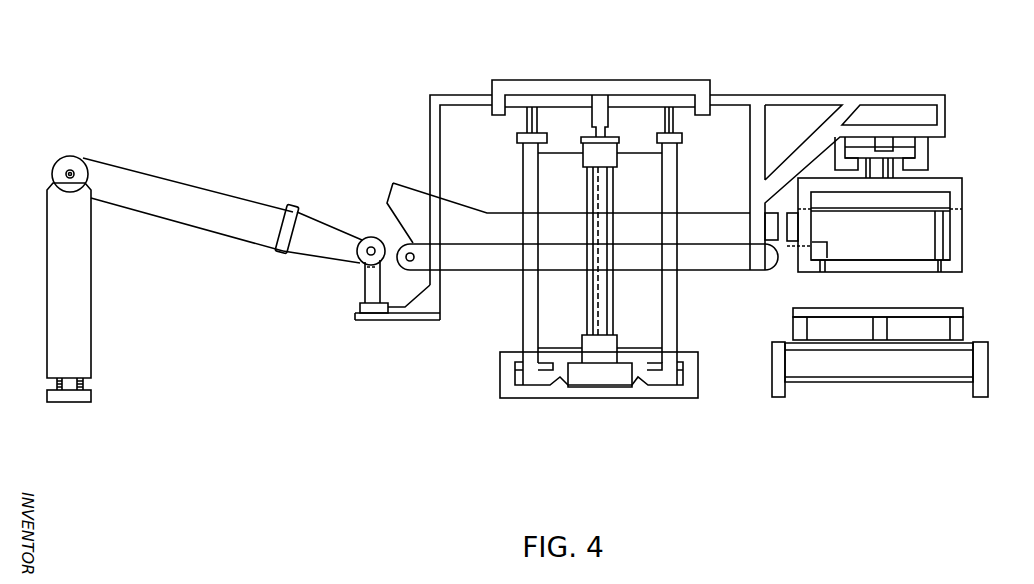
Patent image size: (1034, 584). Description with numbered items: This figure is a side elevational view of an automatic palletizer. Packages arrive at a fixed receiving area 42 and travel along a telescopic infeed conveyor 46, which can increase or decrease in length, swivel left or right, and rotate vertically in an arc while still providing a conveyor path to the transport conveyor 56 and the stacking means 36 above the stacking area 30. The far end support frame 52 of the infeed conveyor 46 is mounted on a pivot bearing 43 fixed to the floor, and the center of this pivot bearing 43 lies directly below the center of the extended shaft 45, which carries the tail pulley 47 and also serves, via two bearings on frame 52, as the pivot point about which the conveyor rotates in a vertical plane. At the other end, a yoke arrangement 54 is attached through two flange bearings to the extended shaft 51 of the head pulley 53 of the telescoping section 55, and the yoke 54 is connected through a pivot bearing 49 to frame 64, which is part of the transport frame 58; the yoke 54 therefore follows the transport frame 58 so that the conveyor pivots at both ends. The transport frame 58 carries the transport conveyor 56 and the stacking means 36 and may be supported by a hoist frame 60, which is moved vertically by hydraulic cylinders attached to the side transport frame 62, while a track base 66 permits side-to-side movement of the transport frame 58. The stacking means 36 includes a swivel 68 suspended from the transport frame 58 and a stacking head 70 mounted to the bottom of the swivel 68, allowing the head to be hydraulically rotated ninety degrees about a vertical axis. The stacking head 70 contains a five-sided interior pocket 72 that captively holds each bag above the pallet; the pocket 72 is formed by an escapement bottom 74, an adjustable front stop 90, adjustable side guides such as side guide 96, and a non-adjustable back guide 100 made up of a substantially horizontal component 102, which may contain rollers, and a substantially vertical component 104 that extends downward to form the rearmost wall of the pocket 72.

The stacking area 30 is at (864, 297).
The stacking means 36 is at (995, 248).
The receiving area 42 is at (82, 147).
The pivot bearing 43 is at (82, 397).
The extended shaft 45 is at (62, 177).
The telescopic infeed conveyor 46 is at (133, 188).
The tail pulley 47 is at (57, 168).
The pivot bearing 49 is at (380, 315).
The extended shaft 51 is at (371, 247).
The far end support frame 52 is at (75, 310).
The head pulley 53 is at (362, 240).
The yoke arrangement 54 is at (372, 280).
The telescoping section 55 is at (324, 243).
The transport conveyor 56 is at (483, 257).
The transport frame 58 is at (880, 100).
The hoist frame 60 is at (634, 90).
The side transport frame 62 is at (530, 303).
The frame 64 is at (455, 103).
The track base 66 is at (598, 390).
The swivel 68 is at (880, 143).
The stacking head 70 is at (957, 198).
The interior pocket 72 is at (880, 243).
The escapement bottom 74 is at (930, 267).
The adjustable front stop 90 is at (940, 225).
The adjustable side guide 96 is at (937, 200).
The non-adjustable back guide 100 is at (815, 253).
The horizontal component 102 is at (793, 248).
The vertical component 104 is at (818, 250).